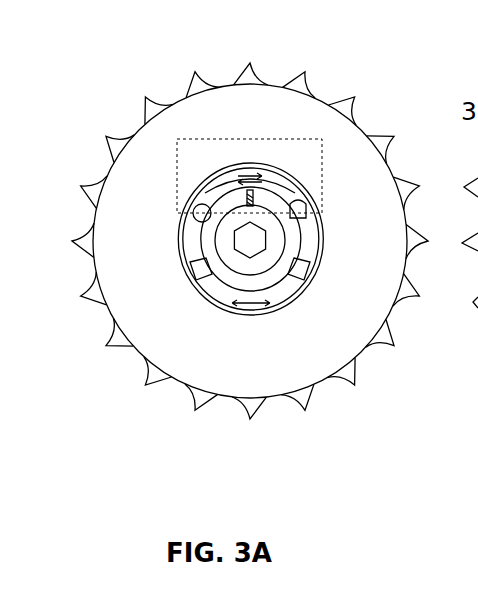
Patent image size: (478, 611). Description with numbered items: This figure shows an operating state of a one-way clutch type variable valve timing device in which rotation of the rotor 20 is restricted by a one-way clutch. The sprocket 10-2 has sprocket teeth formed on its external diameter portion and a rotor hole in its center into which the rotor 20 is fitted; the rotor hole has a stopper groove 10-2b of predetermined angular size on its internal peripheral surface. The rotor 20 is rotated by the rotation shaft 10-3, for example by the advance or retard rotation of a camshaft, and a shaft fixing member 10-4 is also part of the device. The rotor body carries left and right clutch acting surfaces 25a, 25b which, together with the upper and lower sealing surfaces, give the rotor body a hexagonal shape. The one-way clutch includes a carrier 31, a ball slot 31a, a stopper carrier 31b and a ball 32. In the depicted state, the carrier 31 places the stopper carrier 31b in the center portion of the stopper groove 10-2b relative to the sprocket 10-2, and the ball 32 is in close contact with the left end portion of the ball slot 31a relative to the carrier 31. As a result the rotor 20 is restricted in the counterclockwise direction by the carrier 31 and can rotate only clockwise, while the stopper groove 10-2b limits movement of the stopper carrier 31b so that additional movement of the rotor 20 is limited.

The sprocket 10-2 is at (231, 370).
The stopper groove 10-2b is at (288, 175).
The rotation shaft 10-3 is at (273, 280).
The shaft fixing member 10-4 is at (255, 248).
The rotor 20 is at (223, 283).
The left clutch acting surface 25a is at (178, 239).
The right clutch acting surface 25b is at (318, 282).
The carrier 31 is at (227, 185).
The ball slot 31a is at (208, 182).
The stopper carrier 31b is at (263, 178).
The ball 32 is at (187, 197).